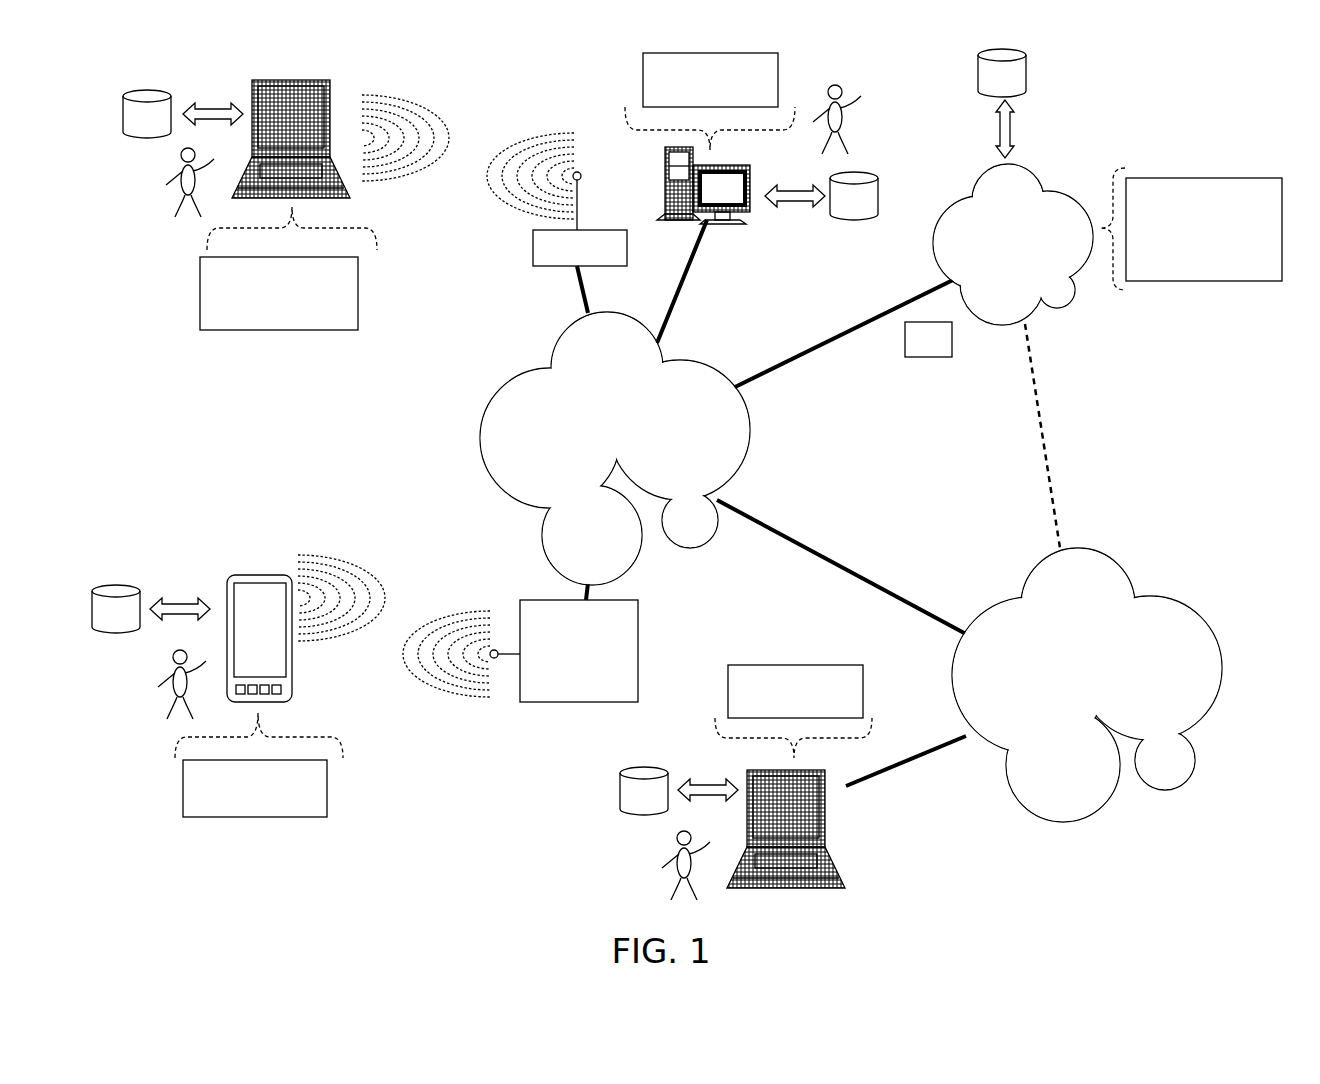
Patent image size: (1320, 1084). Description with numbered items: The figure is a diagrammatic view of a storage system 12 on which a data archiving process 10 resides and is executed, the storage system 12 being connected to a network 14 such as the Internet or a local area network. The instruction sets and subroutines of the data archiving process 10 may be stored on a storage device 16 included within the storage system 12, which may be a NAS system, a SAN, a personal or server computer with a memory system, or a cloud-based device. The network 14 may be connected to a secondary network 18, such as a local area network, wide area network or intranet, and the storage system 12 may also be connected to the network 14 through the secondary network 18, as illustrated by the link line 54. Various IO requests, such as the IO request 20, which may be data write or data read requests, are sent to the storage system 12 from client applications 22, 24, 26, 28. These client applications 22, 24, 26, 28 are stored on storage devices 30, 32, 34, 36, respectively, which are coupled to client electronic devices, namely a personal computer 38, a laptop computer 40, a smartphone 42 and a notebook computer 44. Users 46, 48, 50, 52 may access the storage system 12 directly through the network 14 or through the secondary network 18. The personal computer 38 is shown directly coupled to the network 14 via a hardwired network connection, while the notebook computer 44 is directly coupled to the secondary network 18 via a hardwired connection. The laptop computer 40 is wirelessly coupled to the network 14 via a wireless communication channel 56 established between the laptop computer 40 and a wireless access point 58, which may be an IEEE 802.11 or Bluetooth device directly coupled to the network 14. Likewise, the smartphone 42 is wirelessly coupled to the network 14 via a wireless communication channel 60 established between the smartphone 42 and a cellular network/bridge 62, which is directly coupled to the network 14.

The data archiving process 10 is at (1283, 220).
The storage system 12 is at (1013, 244).
The network 14 is at (615, 448).
The storage device 16 is at (1002, 73).
The secondary network 18 is at (1087, 685).
The IO request 20 is at (952, 335).
The client application 22 is at (778, 83).
The client application 24 is at (358, 270).
The client application 26 is at (328, 778).
The client application 28 is at (864, 690).
The storage device 30 is at (854, 196).
The storage device 32 is at (147, 114).
The storage device 34 is at (116, 609).
The storage device 36 is at (644, 791).
The personal computer 38 is at (750, 180).
The laptop computer 40 is at (328, 105).
The smartphone 42 is at (293, 640).
The notebook computer 44 is at (848, 818).
The user 46 is at (852, 100).
The user 48 is at (152, 173).
The user 50 is at (157, 665).
The user 52 is at (650, 858).
The link line 54 is at (1038, 421).
The wireless communication channel 56 is at (478, 122).
The wireless access point 58 is at (532, 247).
The wireless communication channel 60 is at (406, 600).
The cellular network/bridge 62 is at (640, 615).